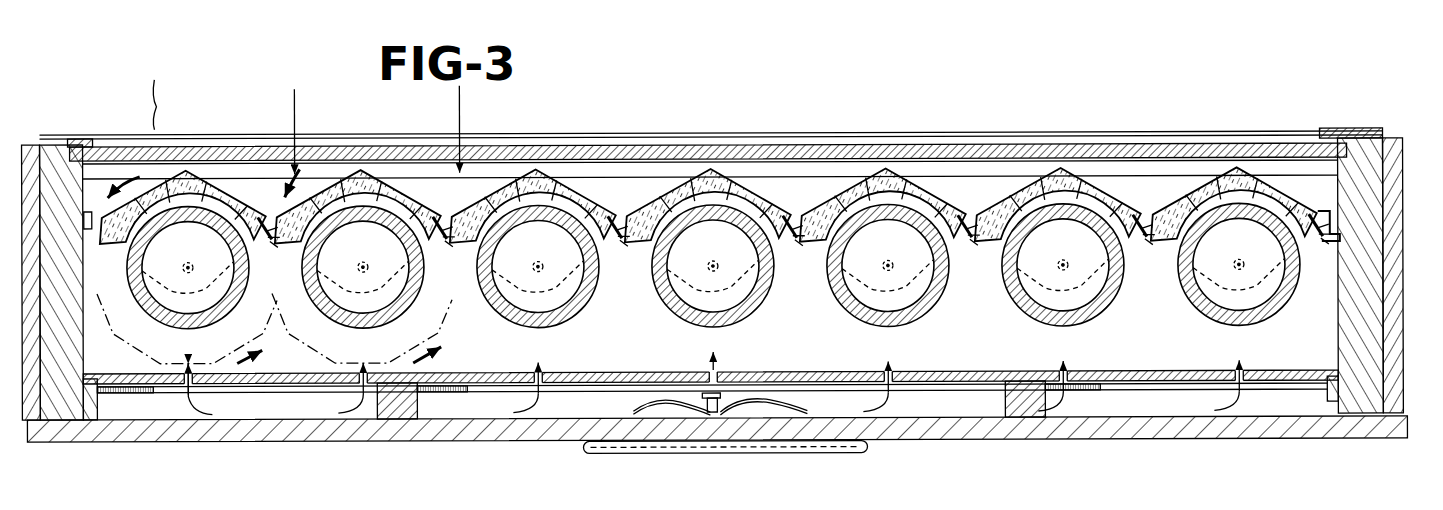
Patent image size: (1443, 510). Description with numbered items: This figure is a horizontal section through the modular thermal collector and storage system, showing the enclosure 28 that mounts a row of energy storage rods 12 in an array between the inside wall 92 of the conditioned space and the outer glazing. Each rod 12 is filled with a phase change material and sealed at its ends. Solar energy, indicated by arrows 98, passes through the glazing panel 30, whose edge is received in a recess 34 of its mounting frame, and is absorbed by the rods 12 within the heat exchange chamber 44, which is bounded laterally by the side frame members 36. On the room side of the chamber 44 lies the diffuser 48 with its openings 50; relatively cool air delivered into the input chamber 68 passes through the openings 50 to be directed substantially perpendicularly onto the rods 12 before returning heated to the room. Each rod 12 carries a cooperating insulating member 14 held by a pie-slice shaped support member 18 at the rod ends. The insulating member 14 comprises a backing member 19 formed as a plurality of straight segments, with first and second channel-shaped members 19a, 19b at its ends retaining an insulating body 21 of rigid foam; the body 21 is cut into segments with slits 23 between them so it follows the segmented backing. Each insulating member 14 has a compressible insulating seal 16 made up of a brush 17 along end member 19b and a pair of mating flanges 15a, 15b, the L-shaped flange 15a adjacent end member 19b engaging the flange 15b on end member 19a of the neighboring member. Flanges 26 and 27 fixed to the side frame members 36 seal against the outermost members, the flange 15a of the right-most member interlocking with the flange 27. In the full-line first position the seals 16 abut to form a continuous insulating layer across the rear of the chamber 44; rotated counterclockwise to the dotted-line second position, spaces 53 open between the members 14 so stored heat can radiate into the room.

The energy storage rod 12 is at (584, 308).
The insulating member 14 is at (605, 190).
The mating flange 15a is at (1320, 212).
The mating flange 15b is at (1170, 252).
The insulating seal 16 is at (783, 243).
The brush 17 is at (1327, 240).
The support member 18 is at (600, 233).
The backing member 19 is at (422, 194).
The first channel-shaped member 19a is at (1178, 270).
The second channel-shaped member 19b is at (1127, 213).
The insulating body 21 is at (463, 247).
The slits 23 is at (720, 186).
The flange 26 is at (90, 233).
The flange 27 is at (1340, 243).
The enclosure 28 is at (958, 127).
The glazing panel 30 is at (185, 148).
The recess 34 is at (79, 143).
The side frame member 36 is at (74, 364).
The heat exchange chamber 44 is at (1168, 346).
The diffuser 48 is at (603, 372).
The openings 50 is at (737, 402).
The spaces 53 is at (274, 333).
The input chamber 68 is at (298, 418).
The inside wall 92 is at (1093, 442).
The arrows 98 is at (672, 177).